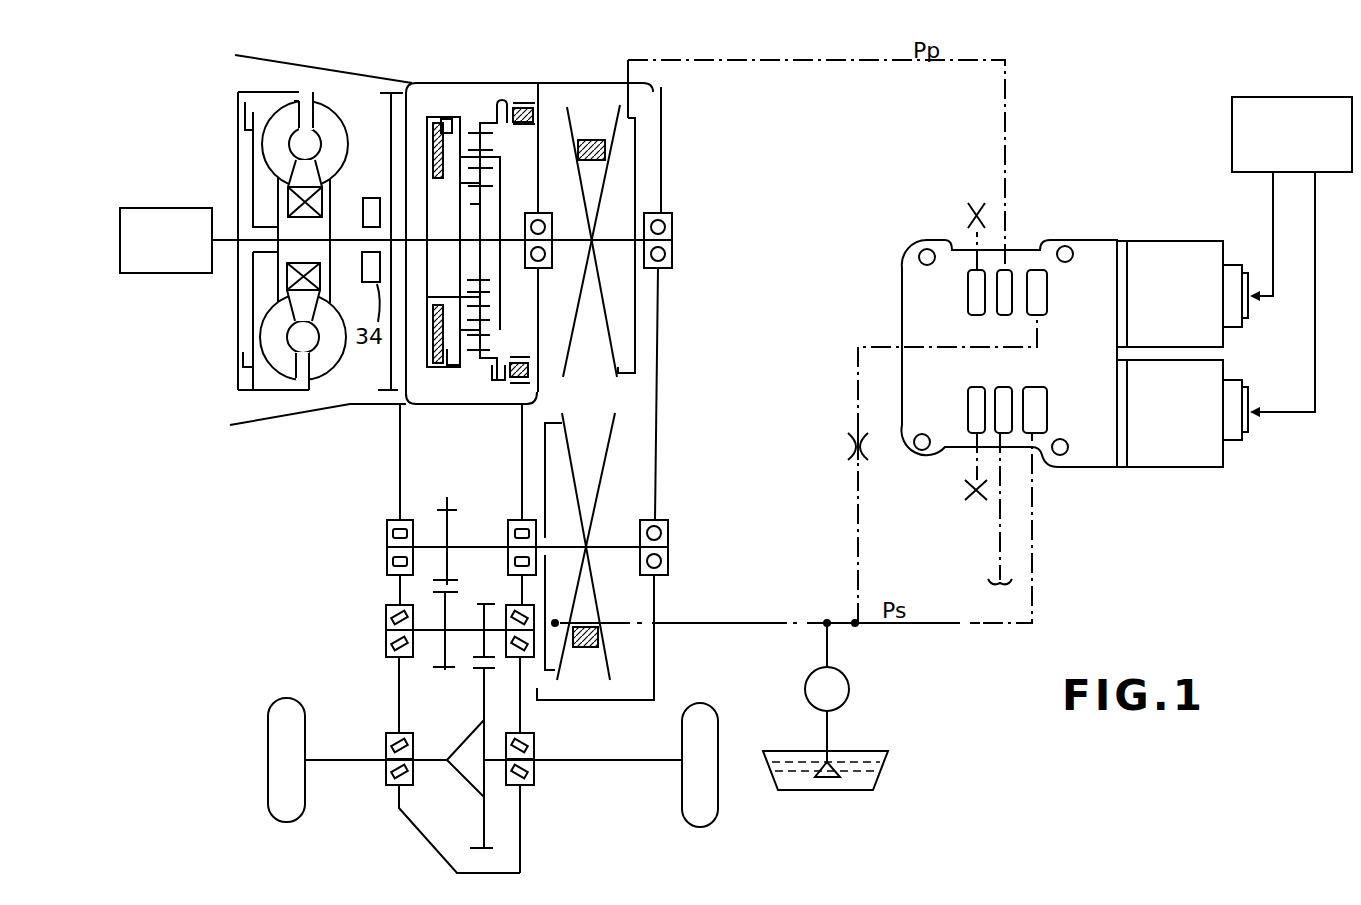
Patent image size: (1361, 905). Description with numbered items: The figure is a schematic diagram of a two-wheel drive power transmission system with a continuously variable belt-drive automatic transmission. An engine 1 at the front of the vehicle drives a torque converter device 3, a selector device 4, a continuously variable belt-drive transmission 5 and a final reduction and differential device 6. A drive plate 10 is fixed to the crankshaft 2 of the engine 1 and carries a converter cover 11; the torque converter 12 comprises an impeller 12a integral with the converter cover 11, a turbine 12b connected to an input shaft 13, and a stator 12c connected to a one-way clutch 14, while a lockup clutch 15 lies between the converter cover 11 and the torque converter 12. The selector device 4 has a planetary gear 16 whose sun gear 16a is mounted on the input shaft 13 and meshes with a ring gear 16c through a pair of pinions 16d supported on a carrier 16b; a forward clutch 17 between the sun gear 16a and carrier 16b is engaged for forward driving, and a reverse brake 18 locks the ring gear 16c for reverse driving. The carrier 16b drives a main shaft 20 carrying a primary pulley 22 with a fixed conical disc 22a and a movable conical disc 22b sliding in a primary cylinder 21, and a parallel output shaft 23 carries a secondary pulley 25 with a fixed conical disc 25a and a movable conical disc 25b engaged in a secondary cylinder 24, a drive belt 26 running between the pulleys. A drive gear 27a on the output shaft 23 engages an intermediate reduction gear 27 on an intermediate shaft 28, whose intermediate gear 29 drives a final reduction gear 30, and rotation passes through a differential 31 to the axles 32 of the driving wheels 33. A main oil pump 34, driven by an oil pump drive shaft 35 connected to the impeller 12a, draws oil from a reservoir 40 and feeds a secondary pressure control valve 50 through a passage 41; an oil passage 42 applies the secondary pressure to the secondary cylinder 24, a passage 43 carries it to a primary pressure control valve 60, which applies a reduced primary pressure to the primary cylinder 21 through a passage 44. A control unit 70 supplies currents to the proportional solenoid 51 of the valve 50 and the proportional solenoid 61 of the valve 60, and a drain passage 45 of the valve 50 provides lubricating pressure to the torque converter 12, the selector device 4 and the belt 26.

The engine 1 is at (164, 275).
The crankshaft 2 is at (224, 243).
The torque converter device 3 is at (290, 216).
The selector device 4 is at (480, 206).
The continuously variable belt-drive transmission 5 is at (545, 455).
The final reduction and differential device 6 is at (465, 640).
The drive plate 10 is at (238, 172).
The converter cover 11 is at (238, 93).
The torque converter 12 is at (290, 222).
The impeller 12a is at (337, 140).
The turbine 12b is at (273, 142).
The stator 12c is at (310, 172).
The input shaft 13 is at (405, 240).
The one-way clutch 14 is at (290, 200).
The lockup clutch 15 is at (245, 110).
The planetary gear 16 is at (484, 215).
The sun gear 16a is at (462, 239).
The carrier 16b is at (522, 178).
The ring gear 16c is at (480, 128).
The pinions 16d is at (480, 333).
The forward clutch 17 is at (433, 117).
The reverse brake 18 is at (525, 102).
The main shaft 20 is at (553, 268).
The primary cylinder 21 is at (636, 143).
The primary pulley 22 is at (588, 224).
The fixed conical disc 22a is at (582, 112).
The movable conical disc 22b is at (608, 347).
The output shaft 23 is at (490, 543).
The secondary cylinder 24 is at (553, 470).
The secondary pulley 25 is at (599, 546).
The fixed conical disc 25a is at (590, 572).
The movable conical disc 25b is at (567, 433).
The drive belt 26 is at (592, 650).
The intermediate reduction gear 27 is at (447, 672).
The drive gear 27a is at (447, 497).
The intermediate shaft 28 is at (433, 632).
The intermediate gear 29 is at (495, 588).
The final reduction gear 30 is at (490, 850).
The differential 31 is at (463, 785).
The axles 32 is at (343, 757).
The driving wheels 33 is at (268, 762).
The main oil pump 34 is at (850, 688).
The oil pump drive shaft 35 is at (350, 258).
The reservoir 40 is at (880, 783).
The passage 41 is at (960, 628).
The oil passage 42 is at (767, 622).
The passage 43 is at (855, 517).
The passage 44 is at (842, 60).
The drain passage 45 is at (998, 545).
The secondary pressure control valve 50 is at (1077, 460).
The proportional solenoid 51 is at (1195, 460).
The primary pressure control valve 60 is at (1103, 247).
The proportional solenoid 61 is at (1202, 247).
The control unit 70 is at (1232, 112).